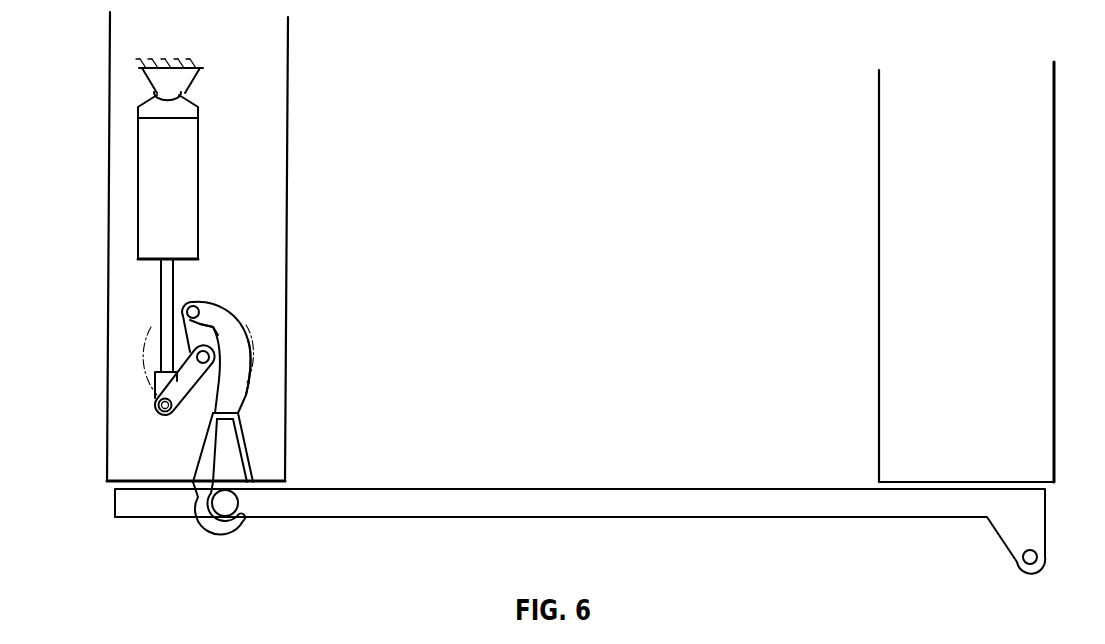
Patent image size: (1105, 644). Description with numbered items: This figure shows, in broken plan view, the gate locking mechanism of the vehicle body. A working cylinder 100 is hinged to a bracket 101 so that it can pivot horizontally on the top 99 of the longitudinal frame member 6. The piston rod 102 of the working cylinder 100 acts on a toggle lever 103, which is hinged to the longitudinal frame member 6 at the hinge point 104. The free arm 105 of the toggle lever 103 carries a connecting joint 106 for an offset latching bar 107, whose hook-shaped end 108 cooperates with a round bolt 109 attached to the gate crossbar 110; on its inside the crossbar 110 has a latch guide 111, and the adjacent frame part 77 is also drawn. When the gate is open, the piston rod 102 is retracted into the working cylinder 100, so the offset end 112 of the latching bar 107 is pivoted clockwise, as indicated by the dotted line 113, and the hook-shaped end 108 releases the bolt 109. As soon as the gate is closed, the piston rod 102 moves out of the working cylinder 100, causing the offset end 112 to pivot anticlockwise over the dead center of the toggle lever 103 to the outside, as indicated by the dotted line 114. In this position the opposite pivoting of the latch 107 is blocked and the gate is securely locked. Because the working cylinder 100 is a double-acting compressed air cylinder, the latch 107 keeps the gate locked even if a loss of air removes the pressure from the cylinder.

The longitudinal frame member 6 is at (90, 449).
The frame 77 is at (1040, 457).
The top of the longitudinal frame member 99 is at (118, 245).
The working cylinder 100 is at (155, 188).
The bracket 101 is at (153, 92).
The piston rod 102 is at (167, 280).
The toggle lever 103 is at (187, 390).
The hinge point 104 is at (192, 355).
The free arm 105 is at (230, 307).
The connecting joint 106 is at (197, 310).
The latching bar 107 is at (232, 393).
The hook-shaped end 108 is at (211, 518).
The round bolt 109 is at (229, 505).
The gate crossbar 110 is at (655, 519).
The latch guide 111 is at (250, 458).
The offset end 112 is at (206, 330).
The dotted line 113 is at (258, 355).
The dotted line 114 is at (150, 328).